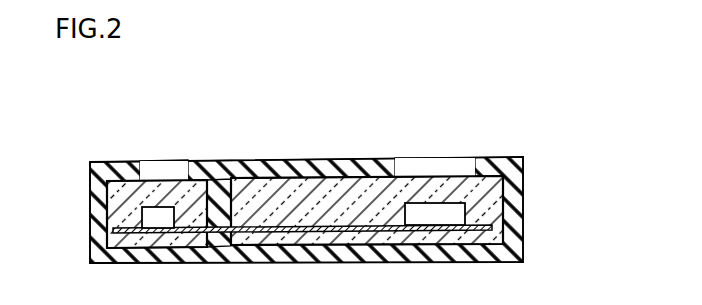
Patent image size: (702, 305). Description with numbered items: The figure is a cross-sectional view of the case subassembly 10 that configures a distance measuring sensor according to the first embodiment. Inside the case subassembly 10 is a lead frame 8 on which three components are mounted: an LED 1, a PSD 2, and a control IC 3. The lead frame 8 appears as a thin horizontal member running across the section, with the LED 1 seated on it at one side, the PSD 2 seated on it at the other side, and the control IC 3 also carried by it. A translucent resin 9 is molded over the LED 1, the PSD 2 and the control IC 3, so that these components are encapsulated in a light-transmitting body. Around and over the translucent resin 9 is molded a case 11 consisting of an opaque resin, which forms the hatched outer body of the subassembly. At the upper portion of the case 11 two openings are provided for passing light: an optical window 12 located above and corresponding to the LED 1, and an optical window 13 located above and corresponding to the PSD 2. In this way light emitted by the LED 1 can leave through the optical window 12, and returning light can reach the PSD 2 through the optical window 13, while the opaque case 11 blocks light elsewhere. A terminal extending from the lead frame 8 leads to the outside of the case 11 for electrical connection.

The LED 1 is at (157, 218).
The PSD 2 is at (435, 214).
The control IC 3 is at (297, 216).
The lead frame 8 is at (483, 236).
The translucent resin 9 is at (112, 197).
The case subassembly 10 is at (335, 148).
The case 11 is at (249, 170).
The optical window 12 is at (156, 172).
The optical window 13 is at (433, 170).